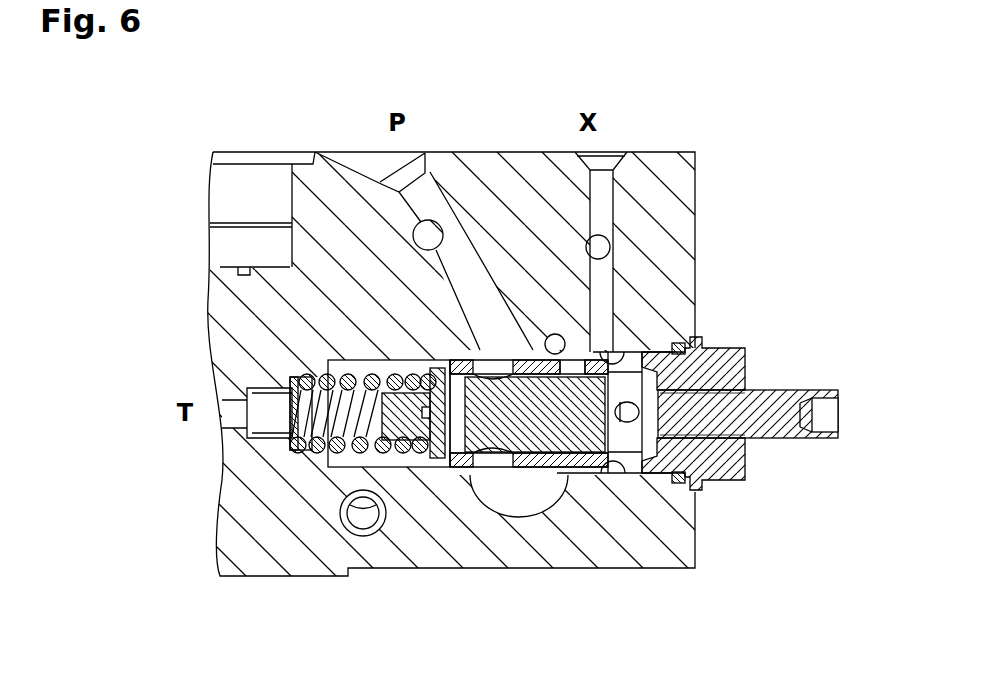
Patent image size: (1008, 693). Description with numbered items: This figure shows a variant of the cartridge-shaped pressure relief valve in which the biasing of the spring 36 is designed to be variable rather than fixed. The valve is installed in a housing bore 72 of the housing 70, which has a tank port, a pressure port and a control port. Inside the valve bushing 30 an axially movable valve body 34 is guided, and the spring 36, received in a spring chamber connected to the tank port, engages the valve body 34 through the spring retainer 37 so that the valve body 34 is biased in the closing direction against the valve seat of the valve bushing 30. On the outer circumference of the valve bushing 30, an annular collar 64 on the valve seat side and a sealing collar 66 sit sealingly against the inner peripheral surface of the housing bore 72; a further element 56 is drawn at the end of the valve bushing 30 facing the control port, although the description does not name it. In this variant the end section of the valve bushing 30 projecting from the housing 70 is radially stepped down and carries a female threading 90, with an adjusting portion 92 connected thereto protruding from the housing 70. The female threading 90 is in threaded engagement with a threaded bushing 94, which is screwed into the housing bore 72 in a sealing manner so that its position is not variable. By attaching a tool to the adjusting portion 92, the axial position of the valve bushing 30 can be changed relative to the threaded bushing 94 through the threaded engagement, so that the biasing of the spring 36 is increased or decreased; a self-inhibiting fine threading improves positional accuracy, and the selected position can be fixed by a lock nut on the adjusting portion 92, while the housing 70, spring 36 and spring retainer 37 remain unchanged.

The valve bushing 30 is at (535, 352).
The valve body 34 is at (543, 416).
The spring 36 is at (328, 380).
The spring retainer 37 is at (412, 447).
The closure cap 56 is at (627, 390).
The annular collar 64 is at (455, 350).
The sealing collar 66 is at (575, 352).
The housing 70 is at (280, 497).
The housing bore 72 is at (633, 473).
The female threading 90 is at (718, 430).
The adjusting portion 92 is at (787, 398).
The threaded bushing 94 is at (723, 367).